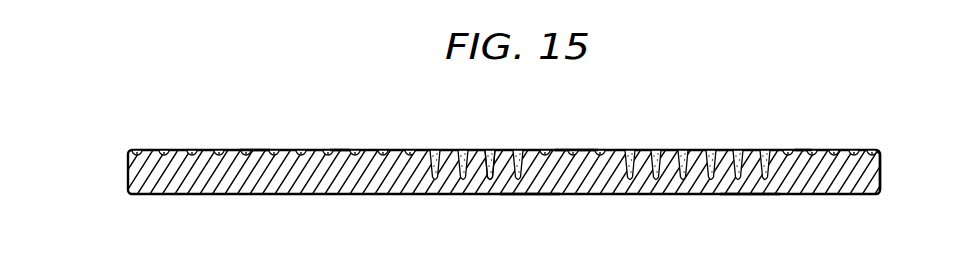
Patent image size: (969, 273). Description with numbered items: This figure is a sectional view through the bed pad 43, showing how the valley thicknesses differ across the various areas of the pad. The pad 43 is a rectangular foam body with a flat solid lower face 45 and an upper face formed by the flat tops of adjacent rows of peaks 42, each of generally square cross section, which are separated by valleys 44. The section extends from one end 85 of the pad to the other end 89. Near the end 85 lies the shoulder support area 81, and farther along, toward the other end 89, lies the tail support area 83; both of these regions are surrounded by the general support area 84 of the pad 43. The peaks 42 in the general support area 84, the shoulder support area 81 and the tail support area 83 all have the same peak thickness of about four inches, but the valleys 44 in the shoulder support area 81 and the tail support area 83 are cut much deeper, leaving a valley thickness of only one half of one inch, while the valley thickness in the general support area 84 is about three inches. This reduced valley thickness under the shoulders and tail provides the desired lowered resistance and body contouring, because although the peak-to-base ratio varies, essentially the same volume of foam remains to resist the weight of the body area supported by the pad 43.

The other end of the pad 89 is at (128, 172).
The general support area 84 is at (254, 150).
The valleys 44 is at (305, 151).
The peaks 42 is at (340, 151).
The tail support area 83 is at (478, 150).
The shoulder support area 81 is at (661, 148).
The one end of the pad 85 is at (881, 158).
The flat solid lower face 45 is at (530, 195).
The bed pad 43 is at (748, 197).